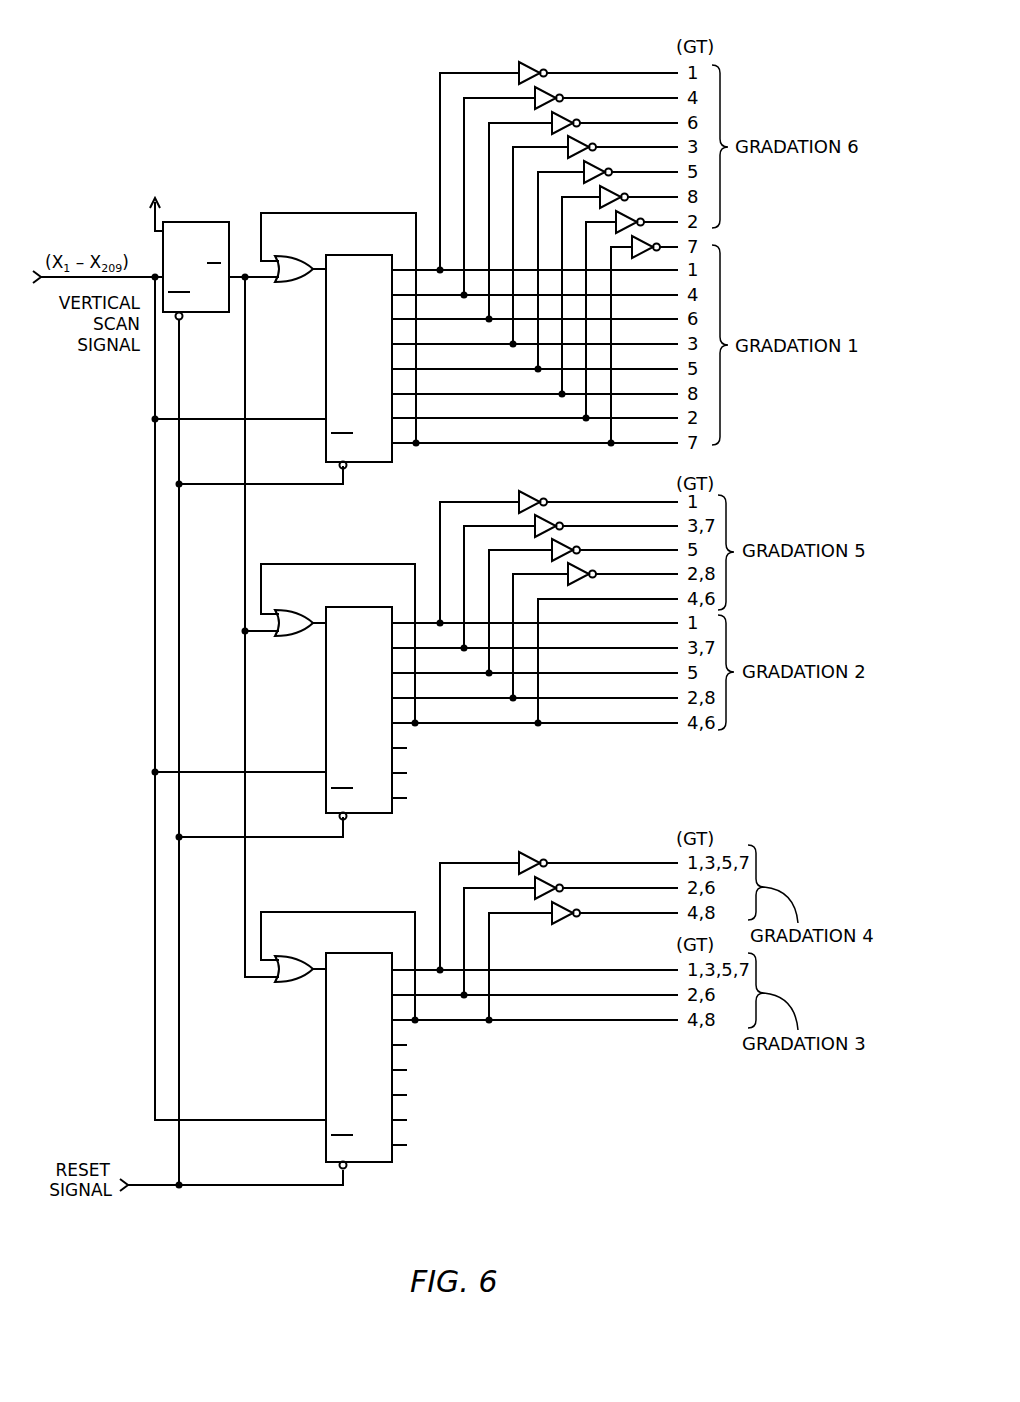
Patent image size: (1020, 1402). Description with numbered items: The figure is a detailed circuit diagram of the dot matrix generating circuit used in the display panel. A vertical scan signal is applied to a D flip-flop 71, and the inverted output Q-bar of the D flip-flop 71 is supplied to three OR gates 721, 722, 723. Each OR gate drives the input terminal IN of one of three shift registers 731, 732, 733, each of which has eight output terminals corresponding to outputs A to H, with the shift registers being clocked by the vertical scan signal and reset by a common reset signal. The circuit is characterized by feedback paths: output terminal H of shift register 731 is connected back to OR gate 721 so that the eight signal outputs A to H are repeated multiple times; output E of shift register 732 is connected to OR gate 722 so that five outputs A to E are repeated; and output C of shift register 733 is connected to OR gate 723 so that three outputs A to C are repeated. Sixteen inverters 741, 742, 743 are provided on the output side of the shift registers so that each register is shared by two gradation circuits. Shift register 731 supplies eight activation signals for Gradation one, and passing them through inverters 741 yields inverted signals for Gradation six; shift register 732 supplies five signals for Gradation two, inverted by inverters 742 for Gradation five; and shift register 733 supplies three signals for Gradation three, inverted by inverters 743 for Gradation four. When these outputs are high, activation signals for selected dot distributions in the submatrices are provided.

The D flip-flop 71 is at (193, 221).
The OR gate 721 is at (288, 283).
The OR gate 722 is at (288, 637).
The OR gate 723 is at (288, 983).
The shift register 731 is at (325, 343).
The shift register 732 is at (325, 695).
The shift register 733 is at (325, 1041).
The inverters 741 is at (537, 95).
The inverters 742 is at (537, 524).
The inverters 743 is at (537, 885).